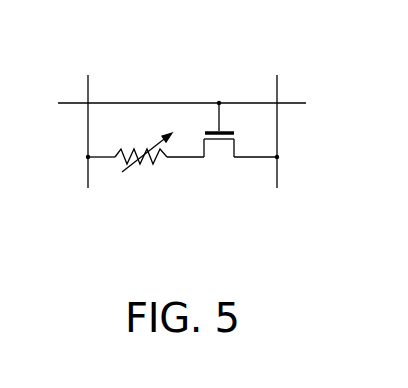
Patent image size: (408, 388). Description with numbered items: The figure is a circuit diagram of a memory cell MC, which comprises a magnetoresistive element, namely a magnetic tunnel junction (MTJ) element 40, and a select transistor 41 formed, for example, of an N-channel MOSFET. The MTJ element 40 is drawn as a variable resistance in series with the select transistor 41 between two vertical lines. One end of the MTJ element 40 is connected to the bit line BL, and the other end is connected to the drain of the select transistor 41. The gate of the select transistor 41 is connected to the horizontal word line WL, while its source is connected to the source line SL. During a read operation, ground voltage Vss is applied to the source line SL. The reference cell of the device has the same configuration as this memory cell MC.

The magnetoresistive element 40 is at (145, 165).
The select transistor 41 is at (221, 162).
The memory cell MC is at (183, 66).
The bit line BL is at (88, 118).
The source line SL is at (278, 118).
The word line WL is at (165, 102).